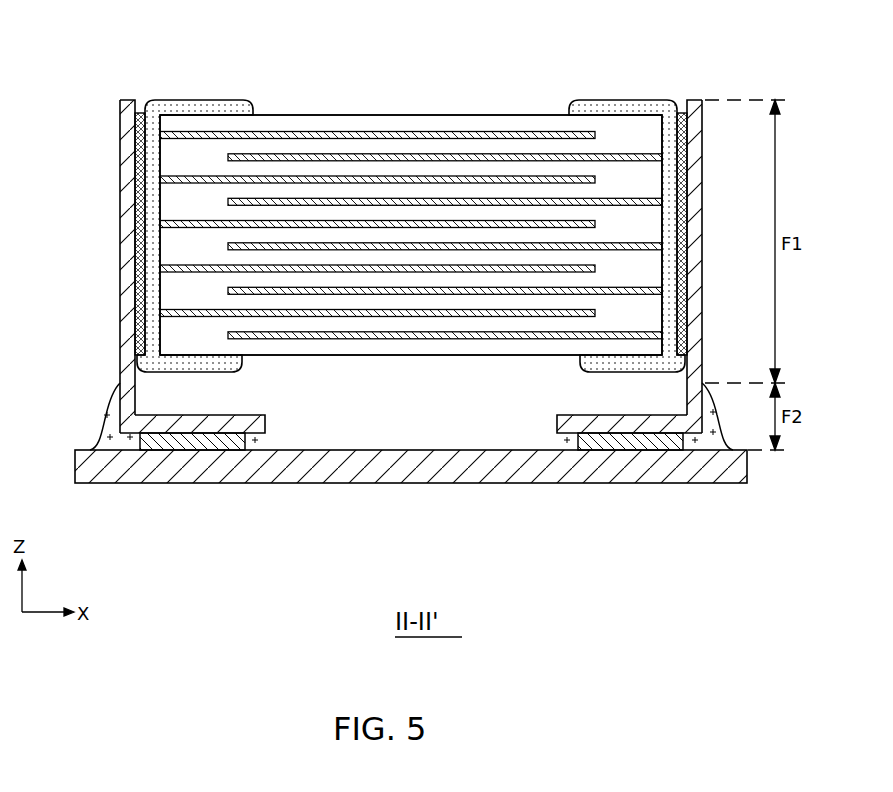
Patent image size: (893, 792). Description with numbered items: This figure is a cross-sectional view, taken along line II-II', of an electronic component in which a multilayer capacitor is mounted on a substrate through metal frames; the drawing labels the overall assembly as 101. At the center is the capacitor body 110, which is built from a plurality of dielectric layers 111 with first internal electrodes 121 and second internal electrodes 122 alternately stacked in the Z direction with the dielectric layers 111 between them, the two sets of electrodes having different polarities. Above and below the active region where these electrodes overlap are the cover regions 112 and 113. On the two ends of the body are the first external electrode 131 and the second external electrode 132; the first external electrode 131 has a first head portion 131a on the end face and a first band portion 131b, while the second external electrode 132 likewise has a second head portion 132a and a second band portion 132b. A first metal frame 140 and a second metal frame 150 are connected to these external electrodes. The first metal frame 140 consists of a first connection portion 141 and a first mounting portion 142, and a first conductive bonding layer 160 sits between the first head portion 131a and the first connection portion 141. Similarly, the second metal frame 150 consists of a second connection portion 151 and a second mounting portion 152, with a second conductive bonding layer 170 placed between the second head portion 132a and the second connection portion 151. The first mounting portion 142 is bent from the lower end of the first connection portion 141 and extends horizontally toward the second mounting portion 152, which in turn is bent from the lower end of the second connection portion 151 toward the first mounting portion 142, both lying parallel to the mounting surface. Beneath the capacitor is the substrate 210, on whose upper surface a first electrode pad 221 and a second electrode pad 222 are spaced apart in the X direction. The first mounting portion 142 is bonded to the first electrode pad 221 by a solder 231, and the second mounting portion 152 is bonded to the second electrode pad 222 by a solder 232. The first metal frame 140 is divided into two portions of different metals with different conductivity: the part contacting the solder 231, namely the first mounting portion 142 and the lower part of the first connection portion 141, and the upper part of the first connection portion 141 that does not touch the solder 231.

The multilayer electronic component 101 is at (433, 111).
The capacitor body 110 is at (408, 116).
The dielectric layer 111 is at (476, 170).
The cover region 112 is at (345, 116).
The cover region 113 is at (440, 348).
The first internal electrode 121 is at (283, 131).
The second internal electrode 122 is at (535, 158).
The first external electrode 131 is at (171, 186).
The first head portion 131a is at (150, 145).
The first band portion 131b is at (208, 100).
The second external electrode 132 is at (651, 186).
The second head portion 132a is at (677, 145).
The second band portion 132b is at (614, 100).
The first metal frame 140 is at (190, 346).
The first connection portion 141 is at (132, 387).
The first mounting portion 142 is at (200, 425).
The second metal frame 150 is at (632, 346).
The second connection portion 151 is at (690, 387).
The second mounting portion 152 is at (622, 427).
The first conductive bonding layer 160 is at (140, 315).
The second conductive bonding layer 170 is at (687, 315).
The substrate 210 is at (440, 452).
The first electrode pad 221 is at (222, 442).
The second electrode pad 222 is at (598, 450).
The solder 231 is at (107, 432).
The solder 232 is at (722, 438).